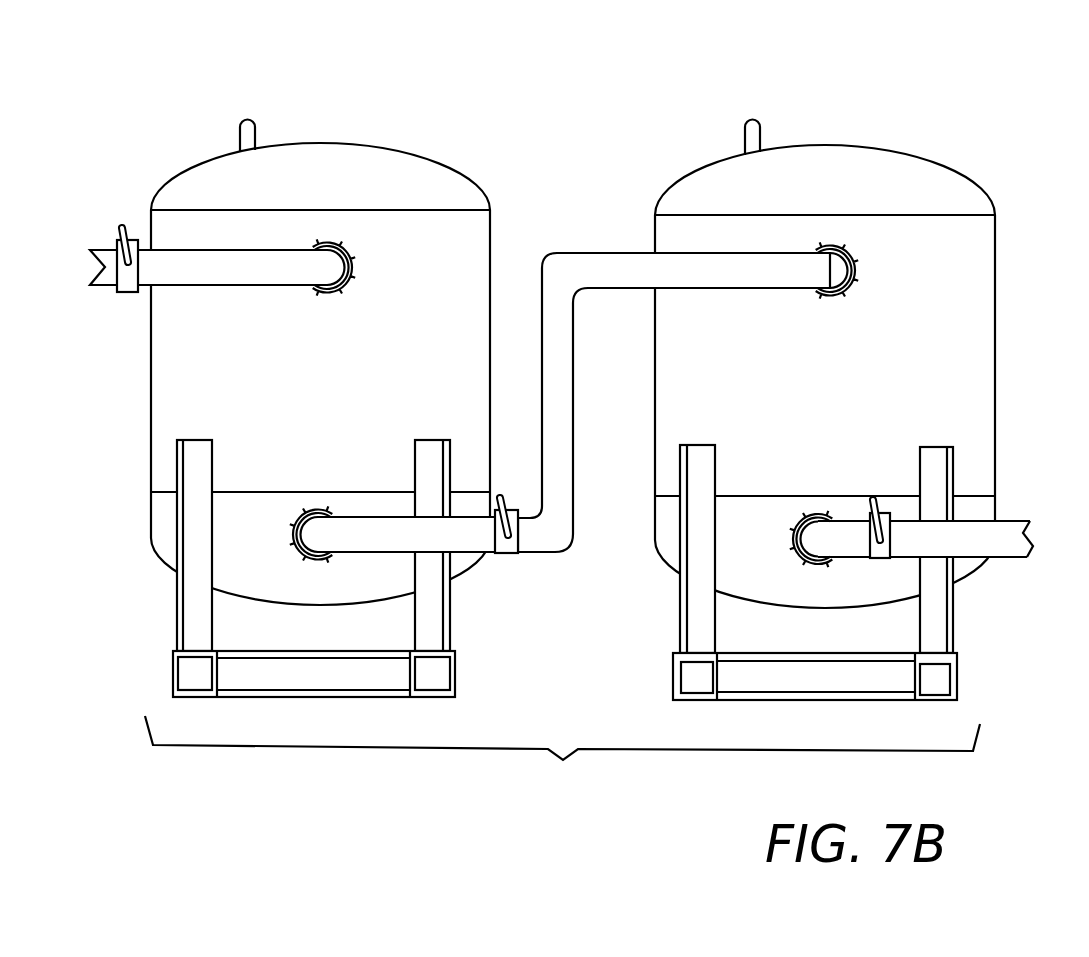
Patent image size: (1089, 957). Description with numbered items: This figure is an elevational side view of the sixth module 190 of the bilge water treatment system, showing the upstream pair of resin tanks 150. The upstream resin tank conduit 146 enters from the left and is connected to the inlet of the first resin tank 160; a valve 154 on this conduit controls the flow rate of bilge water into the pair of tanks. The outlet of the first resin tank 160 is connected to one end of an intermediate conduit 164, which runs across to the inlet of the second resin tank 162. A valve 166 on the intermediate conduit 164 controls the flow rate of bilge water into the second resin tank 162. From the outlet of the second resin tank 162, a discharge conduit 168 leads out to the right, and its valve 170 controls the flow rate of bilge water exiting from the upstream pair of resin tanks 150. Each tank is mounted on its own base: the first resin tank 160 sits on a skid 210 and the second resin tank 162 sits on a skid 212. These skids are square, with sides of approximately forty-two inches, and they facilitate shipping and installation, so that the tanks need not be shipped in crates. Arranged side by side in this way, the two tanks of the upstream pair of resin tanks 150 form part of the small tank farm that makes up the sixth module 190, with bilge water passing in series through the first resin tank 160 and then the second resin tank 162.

The upstream resin tank conduit 146 is at (187, 263).
The valve 154 is at (131, 293).
The first resin tank 160 is at (468, 252).
The second resin tank 162 is at (965, 253).
The intermediate conduit 164 is at (590, 266).
The valve 166 is at (503, 545).
The discharge conduit 168 is at (963, 538).
The valve 170 is at (884, 496).
The skid 210 is at (437, 673).
The skid 212 is at (933, 678).
The upstream pair of resin tanks 150 is at (562, 755).
The sixth module 190 is at (652, 85).